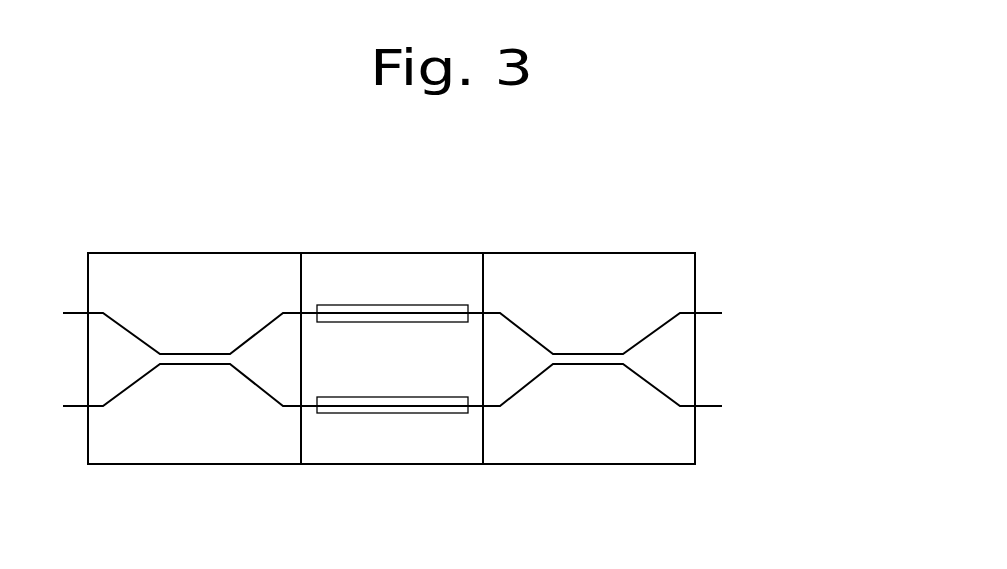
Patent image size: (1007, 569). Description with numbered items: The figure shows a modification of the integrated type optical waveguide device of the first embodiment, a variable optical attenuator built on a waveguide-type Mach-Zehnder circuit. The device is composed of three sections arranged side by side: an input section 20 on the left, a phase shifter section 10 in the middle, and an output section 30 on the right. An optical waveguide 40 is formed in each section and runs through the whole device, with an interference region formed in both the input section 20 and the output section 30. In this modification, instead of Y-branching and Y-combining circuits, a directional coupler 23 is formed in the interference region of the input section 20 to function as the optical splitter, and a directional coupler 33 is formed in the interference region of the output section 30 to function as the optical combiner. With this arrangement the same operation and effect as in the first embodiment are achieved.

The phase shifter section 10 is at (373, 252).
The input section 20 is at (162, 252).
The output section 30 is at (523, 252).
The optical waveguide 40 is at (125, 325).
The directional coupler 23 is at (189, 385).
The directional coupler 33 is at (575, 383).